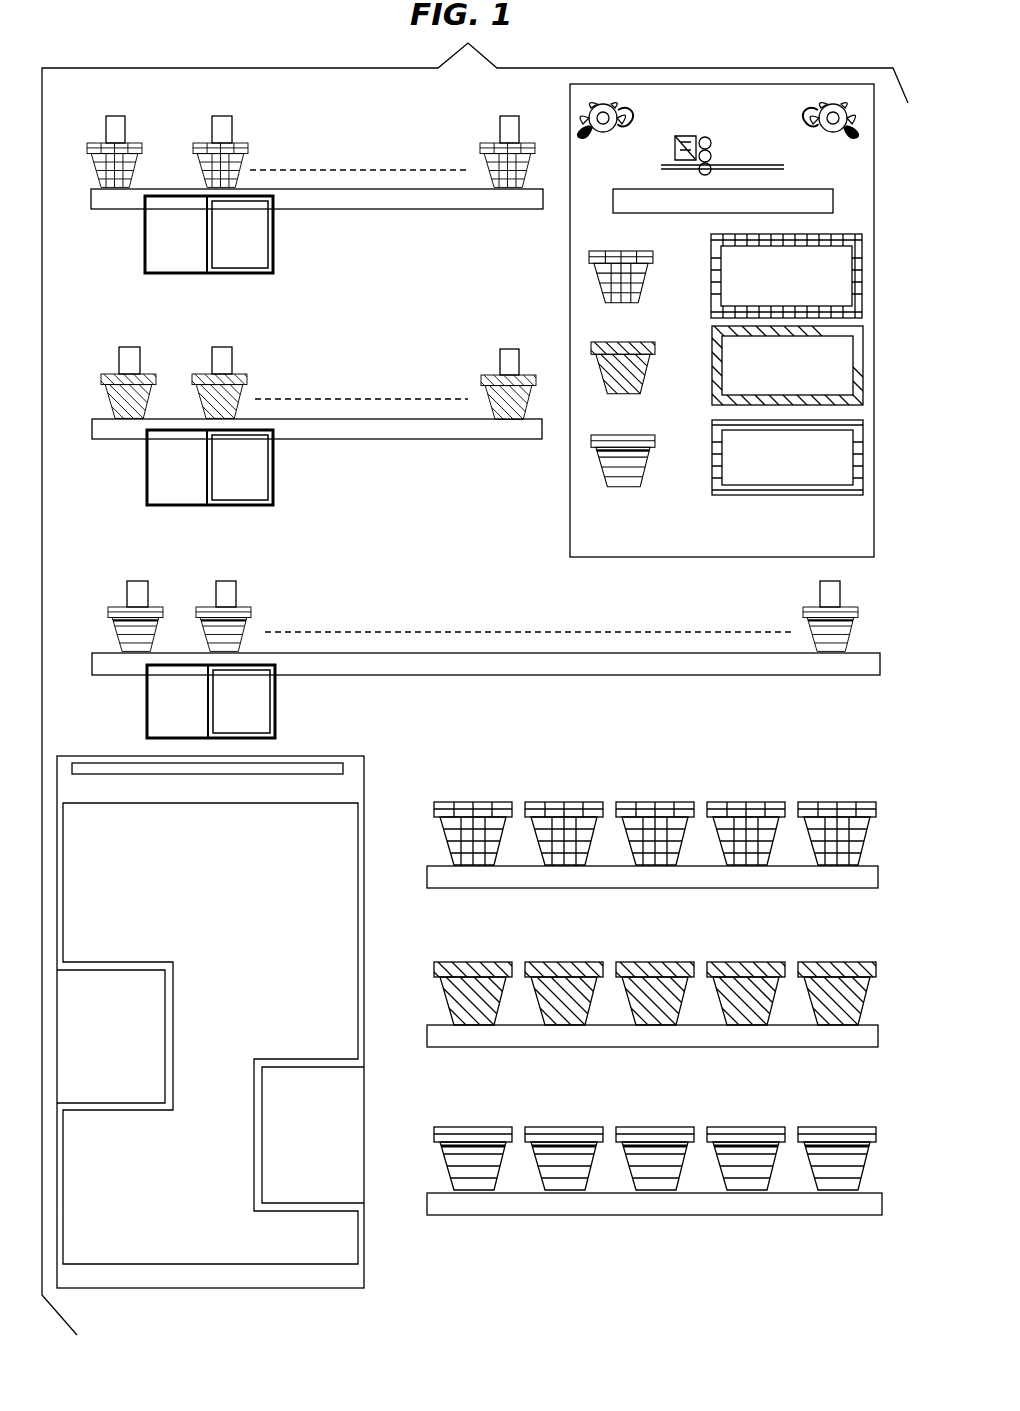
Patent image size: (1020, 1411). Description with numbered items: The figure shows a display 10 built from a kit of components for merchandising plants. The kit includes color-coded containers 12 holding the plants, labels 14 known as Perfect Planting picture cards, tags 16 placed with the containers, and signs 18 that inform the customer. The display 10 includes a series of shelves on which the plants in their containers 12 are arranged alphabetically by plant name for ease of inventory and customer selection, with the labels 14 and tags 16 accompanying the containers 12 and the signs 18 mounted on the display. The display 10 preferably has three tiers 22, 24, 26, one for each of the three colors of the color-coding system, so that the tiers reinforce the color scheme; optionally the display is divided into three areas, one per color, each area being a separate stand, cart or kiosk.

The display 10 is at (183, 50).
The color-coded containers 12 is at (96, 168).
The labels 14 is at (146, 241).
The tags 16 is at (118, 123).
The signs 18 is at (858, 518).
The tier 22 is at (878, 878).
The tier 24 is at (878, 1036).
The tier 26 is at (882, 1204).